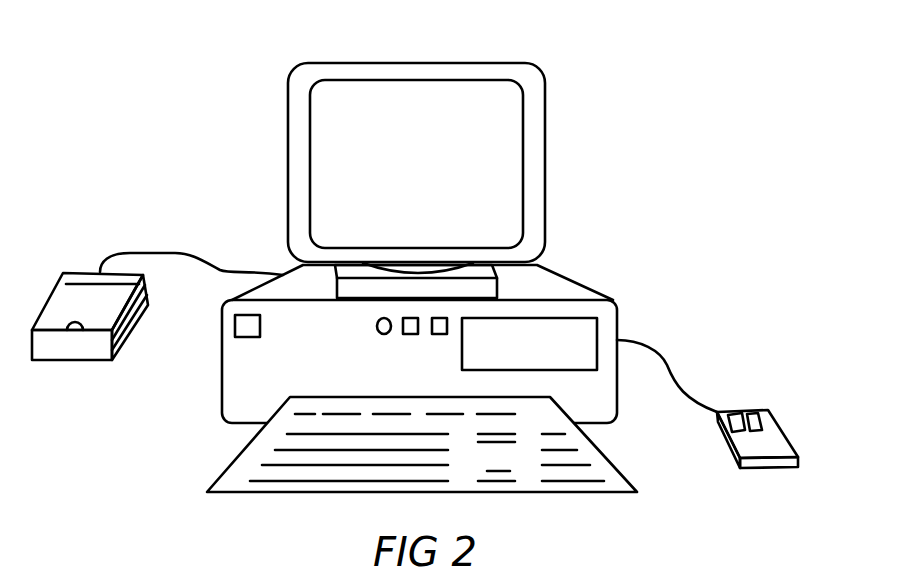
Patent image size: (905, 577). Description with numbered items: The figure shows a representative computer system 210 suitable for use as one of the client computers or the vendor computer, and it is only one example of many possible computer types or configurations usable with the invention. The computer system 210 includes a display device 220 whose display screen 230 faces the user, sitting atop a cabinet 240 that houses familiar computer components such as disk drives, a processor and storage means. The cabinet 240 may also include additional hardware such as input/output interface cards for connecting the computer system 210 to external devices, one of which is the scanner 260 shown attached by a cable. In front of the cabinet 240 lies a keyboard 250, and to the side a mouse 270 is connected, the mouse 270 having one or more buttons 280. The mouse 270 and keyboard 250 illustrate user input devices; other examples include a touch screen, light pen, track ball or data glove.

The computer system 210 is at (435, 267).
The display device 220 is at (540, 165).
The display screen 230 is at (416, 164).
The cabinet 240 is at (545, 287).
The keyboard 250 is at (462, 485).
The scanner 260 is at (92, 350).
The mouse 270 is at (729, 420).
The buttons 280 is at (752, 412).